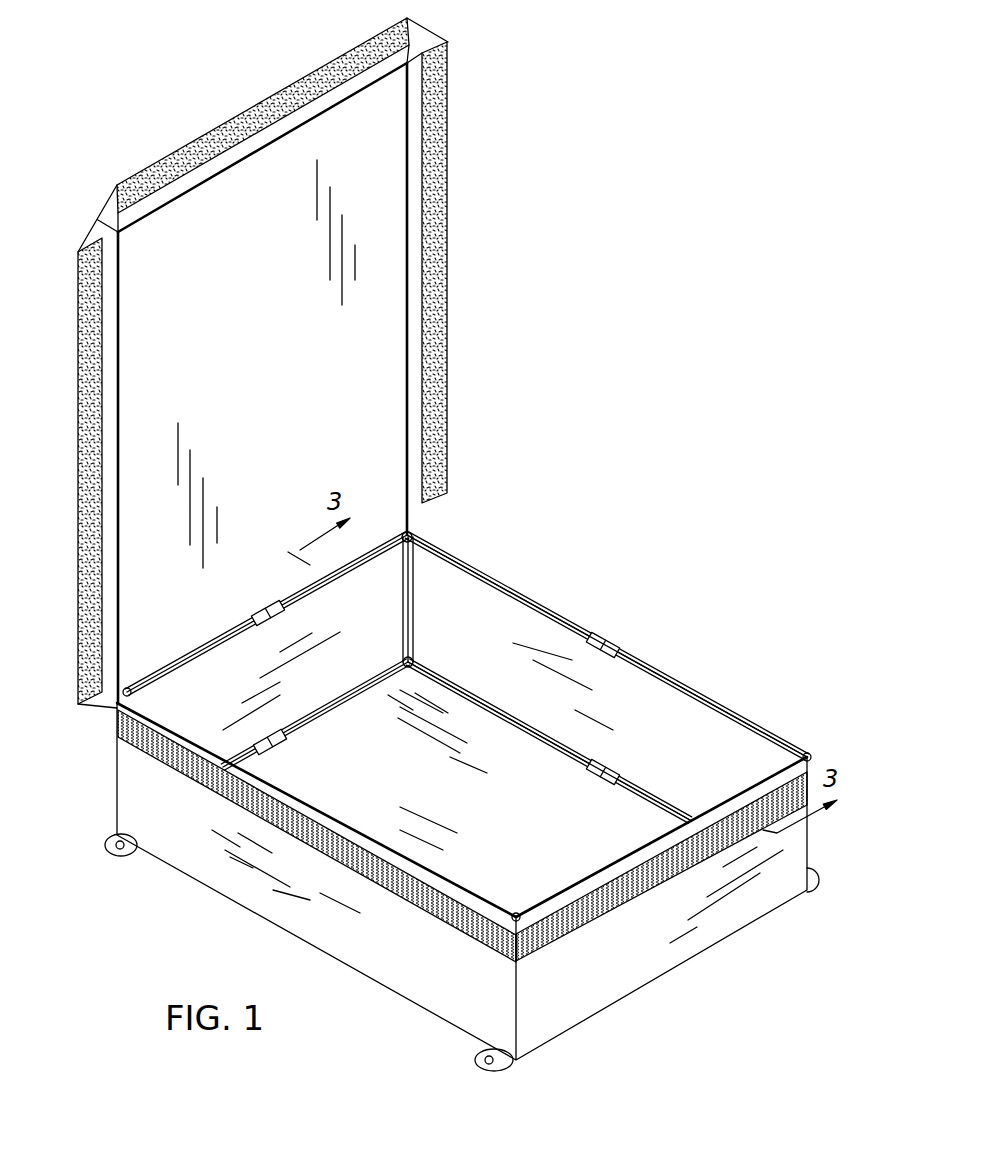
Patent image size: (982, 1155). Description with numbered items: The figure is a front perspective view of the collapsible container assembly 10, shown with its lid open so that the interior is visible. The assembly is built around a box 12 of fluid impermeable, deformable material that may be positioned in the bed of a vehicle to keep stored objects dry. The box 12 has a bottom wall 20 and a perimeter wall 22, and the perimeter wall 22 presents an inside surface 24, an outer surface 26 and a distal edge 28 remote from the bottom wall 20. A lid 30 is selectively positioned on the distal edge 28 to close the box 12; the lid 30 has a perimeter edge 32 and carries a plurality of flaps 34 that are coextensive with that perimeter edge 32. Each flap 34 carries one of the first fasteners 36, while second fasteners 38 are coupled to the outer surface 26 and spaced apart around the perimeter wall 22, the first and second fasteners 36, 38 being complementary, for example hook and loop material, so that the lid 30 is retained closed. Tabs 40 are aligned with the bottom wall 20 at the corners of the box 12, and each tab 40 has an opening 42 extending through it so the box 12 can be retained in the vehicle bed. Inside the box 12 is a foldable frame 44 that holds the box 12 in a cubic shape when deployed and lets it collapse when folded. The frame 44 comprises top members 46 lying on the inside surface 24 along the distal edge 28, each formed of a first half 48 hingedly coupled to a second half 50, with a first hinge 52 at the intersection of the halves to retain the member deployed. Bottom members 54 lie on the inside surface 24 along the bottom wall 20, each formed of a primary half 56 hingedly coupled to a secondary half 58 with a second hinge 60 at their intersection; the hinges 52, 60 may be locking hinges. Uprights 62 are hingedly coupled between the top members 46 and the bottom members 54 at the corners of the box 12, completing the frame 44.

The collapsible container assembly 10 is at (636, 126).
The box 12 is at (810, 757).
The bottom wall 20 is at (502, 745).
The perimeter wall 22 is at (717, 913).
The inside surface 24 is at (680, 718).
The outer surface 26 is at (772, 876).
The distal edge 28 is at (760, 728).
The lid 30 is at (193, 222).
The perimeter edge 32 is at (407, 210).
The flaps 34 is at (288, 85).
The first fasteners 36 is at (365, 48).
The second fasteners 38 is at (330, 860).
The tabs 40 is at (105, 852).
The opening 42 is at (128, 880).
The frame 44 is at (470, 568).
The top members 46 is at (385, 530).
The first half 48 is at (501, 588).
The second half 50 is at (641, 668).
The first hinges 52 is at (274, 603).
The bottom members 54 is at (283, 732).
The primary half 56 is at (555, 748).
The secondary half 58 is at (645, 740).
The second hinges 60 is at (655, 728).
The uprights 62 is at (467, 578).